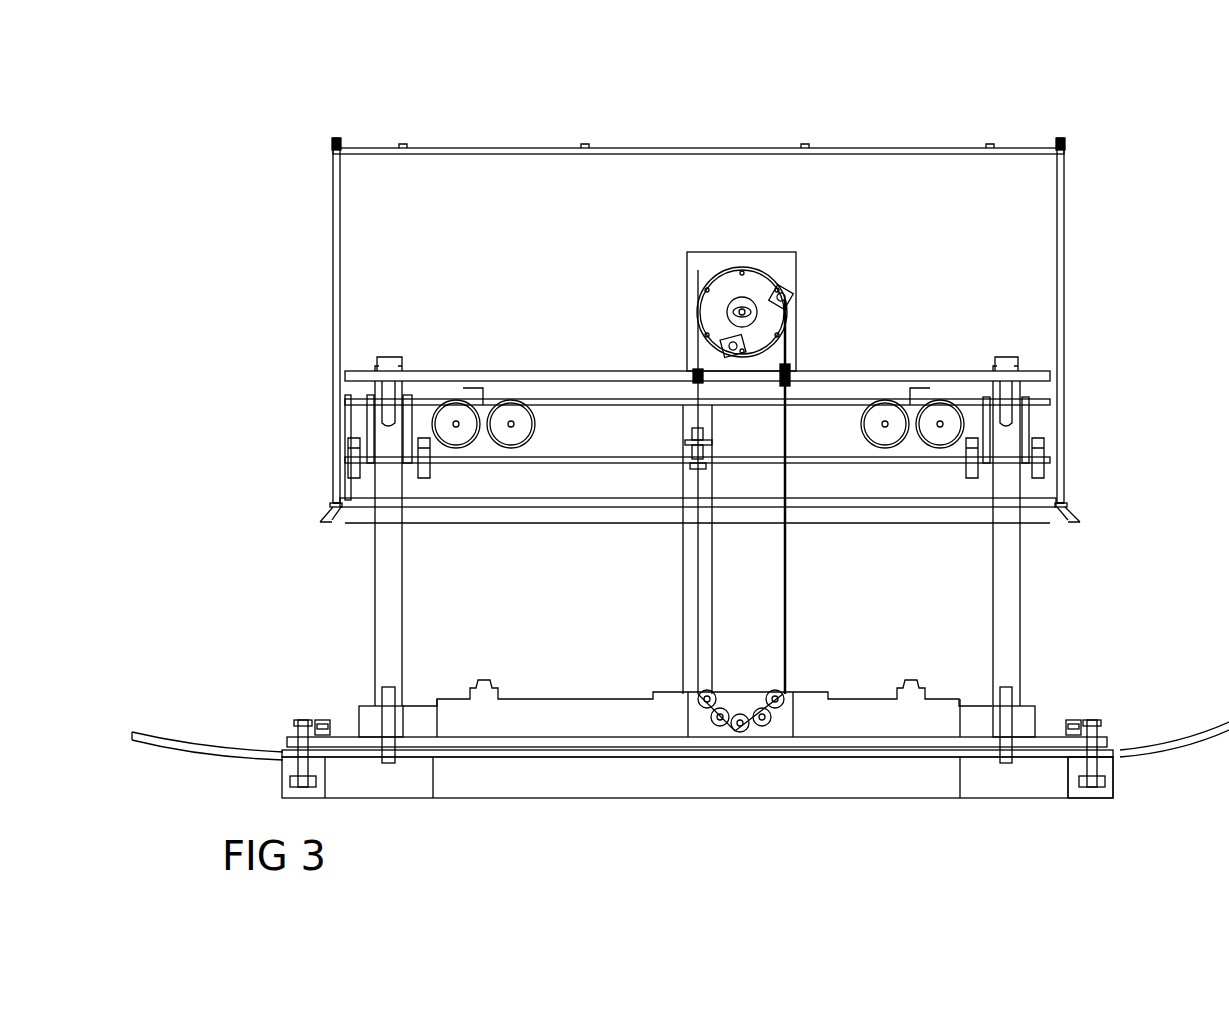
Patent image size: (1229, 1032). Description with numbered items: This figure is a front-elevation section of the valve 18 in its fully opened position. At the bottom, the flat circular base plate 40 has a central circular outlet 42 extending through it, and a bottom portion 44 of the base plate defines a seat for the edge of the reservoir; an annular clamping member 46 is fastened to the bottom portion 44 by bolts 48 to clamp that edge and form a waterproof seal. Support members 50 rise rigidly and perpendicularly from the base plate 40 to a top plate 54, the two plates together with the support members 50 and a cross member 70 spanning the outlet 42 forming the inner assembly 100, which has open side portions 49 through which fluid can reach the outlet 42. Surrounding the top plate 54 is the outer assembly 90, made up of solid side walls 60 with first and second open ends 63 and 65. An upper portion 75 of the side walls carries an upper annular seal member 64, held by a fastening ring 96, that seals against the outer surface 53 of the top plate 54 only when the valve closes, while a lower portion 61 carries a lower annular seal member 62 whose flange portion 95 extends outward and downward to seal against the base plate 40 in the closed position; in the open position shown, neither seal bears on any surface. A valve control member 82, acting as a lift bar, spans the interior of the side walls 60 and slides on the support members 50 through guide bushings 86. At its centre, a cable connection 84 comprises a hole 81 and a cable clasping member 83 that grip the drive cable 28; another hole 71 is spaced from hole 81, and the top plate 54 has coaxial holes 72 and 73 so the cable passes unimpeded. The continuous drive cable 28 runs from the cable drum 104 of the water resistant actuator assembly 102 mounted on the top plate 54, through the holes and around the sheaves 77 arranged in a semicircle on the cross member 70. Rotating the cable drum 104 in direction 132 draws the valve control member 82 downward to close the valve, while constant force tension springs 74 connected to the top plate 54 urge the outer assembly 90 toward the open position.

The valve 18 is at (711, 277).
The drive cable 28 is at (734, 482).
The base plate 40 is at (530, 742).
The central circular outlet 42 is at (923, 822).
The bottom portion 44 is at (1080, 748).
The annular clamping member 46 is at (1110, 776).
The bolts 48 is at (1093, 790).
The open side portions 49 is at (320, 634).
The support members 50 is at (375, 586).
The outer surface 53 is at (356, 368).
The top plate 54 is at (875, 371).
The solid side walls 60 is at (735, 277).
The lower portion 61 is at (1070, 490).
The lower annular seal member 62 is at (330, 505).
The first open end 63 is at (948, 130).
The upper annular seal member 64 is at (835, 154).
The second open end 65 is at (900, 533).
The cross member 70 is at (584, 710).
The hole 71 is at (788, 466).
The hole 72 is at (690, 370).
The hole 73 is at (790, 368).
The constant force tension springs 74 is at (518, 400).
The upper portion 75 is at (1066, 162).
The sheaves 77 is at (740, 714).
The hole 81 is at (706, 468).
The valve control member 82 is at (560, 447).
The cable clasping member 83 is at (690, 448).
The cable connection 84 is at (712, 440).
The guide bushings 86 is at (370, 410).
The outer assembly 90 is at (1138, 222).
The flange portion 95 is at (344, 520).
The fastening ring 96 is at (1066, 148).
The inner assembly 100 is at (1074, 566).
The actuator assembly 102 is at (720, 270).
The cable drum 104 is at (762, 283).
The direction 132 is at (660, 327).